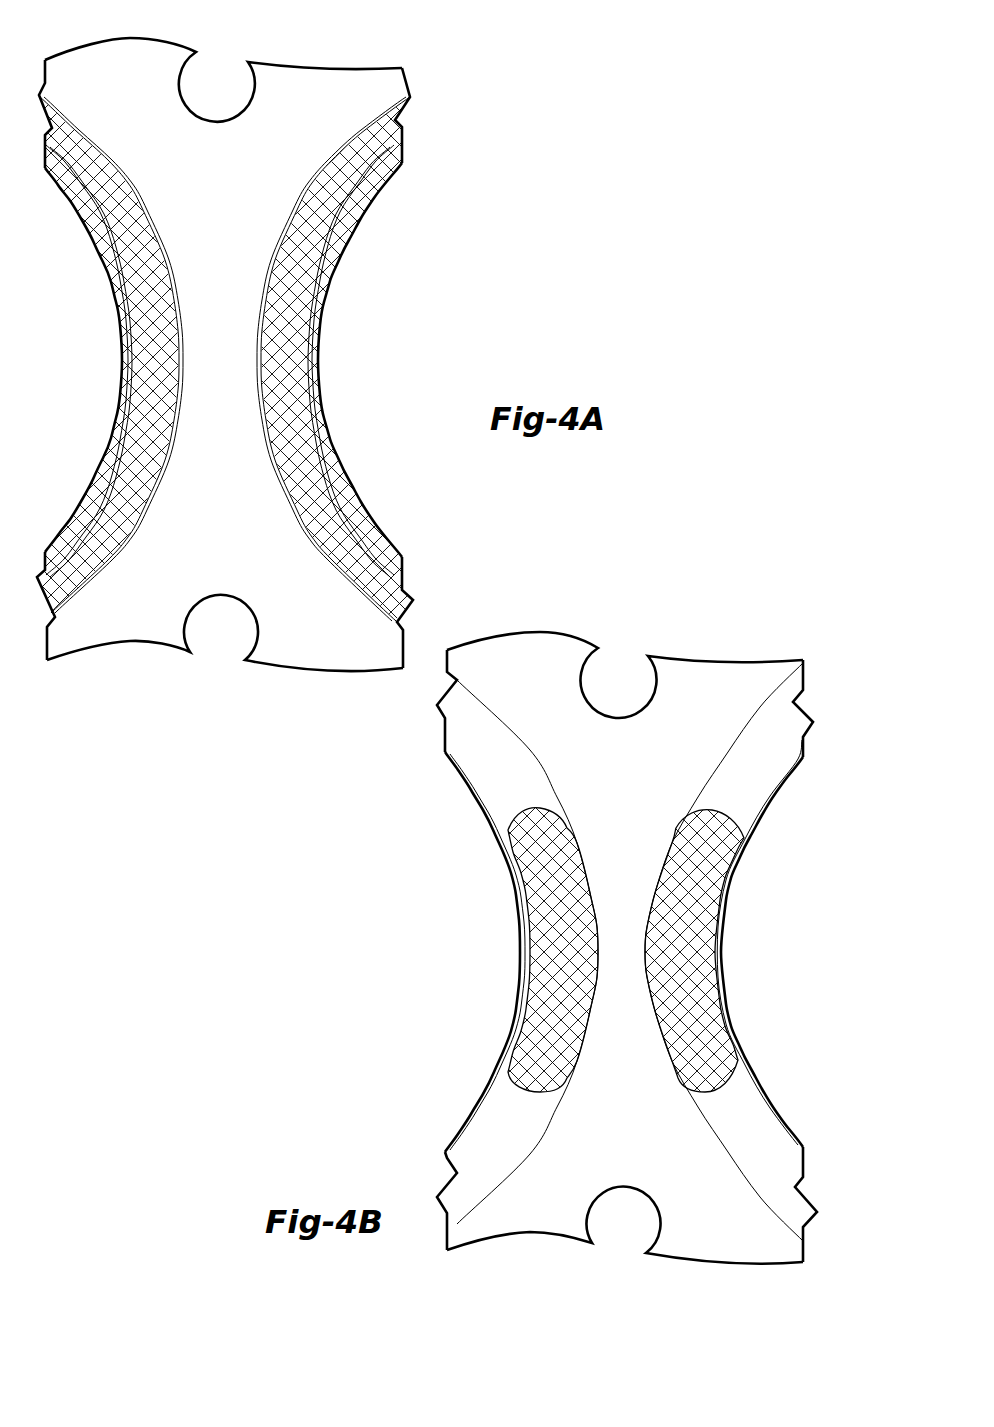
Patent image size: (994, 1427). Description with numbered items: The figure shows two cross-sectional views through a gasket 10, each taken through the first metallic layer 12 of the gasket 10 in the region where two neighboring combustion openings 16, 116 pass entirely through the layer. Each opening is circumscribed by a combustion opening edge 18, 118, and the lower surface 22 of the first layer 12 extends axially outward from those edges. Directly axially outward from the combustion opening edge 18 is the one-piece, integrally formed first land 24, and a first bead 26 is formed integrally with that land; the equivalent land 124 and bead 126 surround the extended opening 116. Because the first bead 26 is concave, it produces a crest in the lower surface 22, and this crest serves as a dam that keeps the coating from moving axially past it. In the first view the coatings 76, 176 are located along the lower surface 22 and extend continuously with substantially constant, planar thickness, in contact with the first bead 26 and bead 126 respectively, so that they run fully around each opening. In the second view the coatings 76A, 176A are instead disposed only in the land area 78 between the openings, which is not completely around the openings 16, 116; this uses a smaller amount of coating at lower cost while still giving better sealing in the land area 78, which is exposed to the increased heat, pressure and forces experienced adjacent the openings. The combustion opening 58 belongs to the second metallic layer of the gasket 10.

In FIG. 4A, the gasket 10 is at (254, 345).
In FIG. 4B, the gasket 10 is at (654, 954).
In FIG. 4A, the first metallic layer 12 is at (385, 82).
In FIG. 4B, the first metallic layer 12 is at (783, 675).
In FIG. 4A, the combustion opening 16 is at (84, 453).
In FIG. 4B, the combustion opening 16 is at (496, 913).
In FIG. 4A, the combustion opening 116 is at (391, 302).
In FIG. 4B, the combustion opening 116 is at (793, 913).
In FIG. 4A, the combustion opening edge 18 is at (122, 378).
In FIG. 4B, the combustion opening edge 18 is at (518, 988).
In FIG. 4A, the combustion opening edge 118 is at (315, 387).
In FIG. 4B, the combustion opening edge 118 is at (732, 1017).
In FIG. 4A, the lower surface 22 is at (235, 552).
In FIG. 4B, the lower surface 22 is at (631, 1133).
In FIG. 4A, the first land 24 is at (118, 295).
In FIG. 4B, the first land 24 is at (486, 803).
In FIG. 4A, the first bead 26 is at (128, 329).
In FIG. 4B, the first bead 26 is at (512, 842).
In FIG. 4A, the first land 124 is at (312, 350).
In FIG. 4B, the first land 124 is at (757, 803).
In FIG. 4A, the first bead 126 is at (320, 443).
In FIG. 4B, the first bead 126 is at (732, 843).
In FIG. 4A, the coating 76 is at (152, 393).
In FIG. 4A, the coating 176 is at (277, 383).
In FIG. 4B, the coating 76A is at (553, 967).
In FIG. 4B, the coating 176A is at (670, 960).
In FIG. 4A, the land area 78 is at (215, 300).
In FIG. 4B, the land area 78 is at (627, 855).
In FIG. 4B, the combustion opening 58 is at (703, 1250).